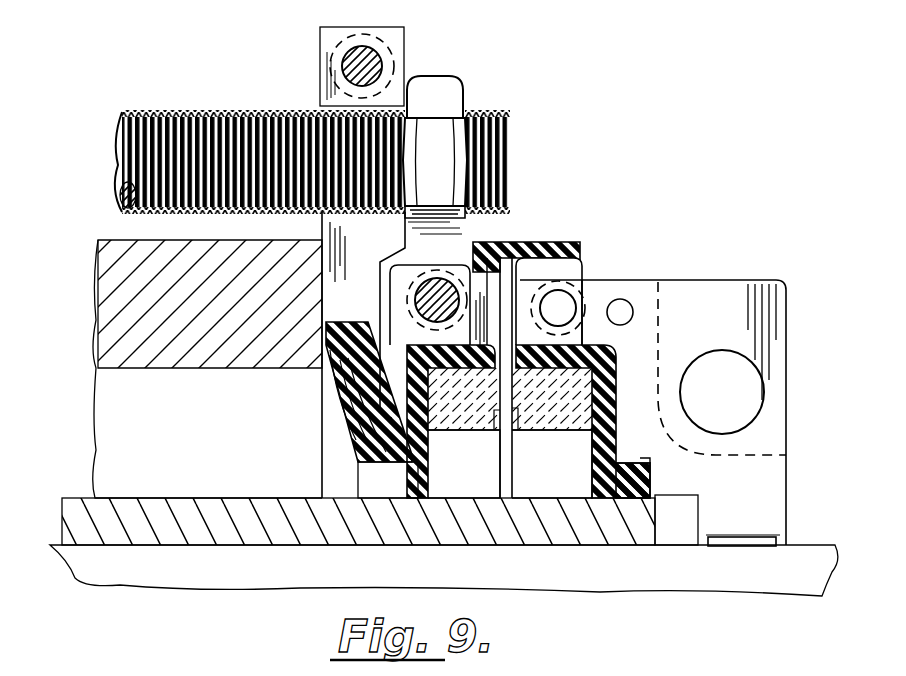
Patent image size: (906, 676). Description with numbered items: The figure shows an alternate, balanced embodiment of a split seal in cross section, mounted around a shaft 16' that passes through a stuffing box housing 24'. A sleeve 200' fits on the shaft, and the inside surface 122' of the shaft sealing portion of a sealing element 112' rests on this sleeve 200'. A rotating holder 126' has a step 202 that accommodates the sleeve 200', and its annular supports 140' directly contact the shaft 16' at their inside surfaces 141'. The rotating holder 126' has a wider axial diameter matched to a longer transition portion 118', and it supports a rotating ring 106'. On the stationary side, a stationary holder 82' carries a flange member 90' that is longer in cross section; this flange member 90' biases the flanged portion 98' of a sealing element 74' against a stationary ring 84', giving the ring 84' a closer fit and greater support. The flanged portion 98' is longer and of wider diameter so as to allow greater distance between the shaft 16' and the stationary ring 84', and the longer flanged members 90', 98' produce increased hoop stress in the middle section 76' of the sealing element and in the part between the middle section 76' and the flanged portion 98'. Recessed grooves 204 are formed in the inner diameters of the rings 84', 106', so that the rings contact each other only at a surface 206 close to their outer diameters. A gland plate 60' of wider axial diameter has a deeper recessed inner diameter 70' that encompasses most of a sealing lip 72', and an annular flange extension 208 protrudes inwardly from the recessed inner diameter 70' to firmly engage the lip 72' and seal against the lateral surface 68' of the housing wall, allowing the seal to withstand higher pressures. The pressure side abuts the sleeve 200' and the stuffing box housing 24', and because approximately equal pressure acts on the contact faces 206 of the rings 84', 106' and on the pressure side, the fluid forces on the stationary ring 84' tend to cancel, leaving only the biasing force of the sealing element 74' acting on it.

The shaft 16' is at (444, 585).
The sleeve 200' is at (328, 521).
The step 202 is at (697, 512).
The stuffing box housing 24' is at (177, 369).
The lateral surface of the housing wall 68' is at (312, 255).
The gland plate 60' is at (389, 58).
The sealing lip 72' is at (335, 355).
The recessed inner diameter 70' is at (338, 392).
The annular flange extension 208 is at (330, 428).
The sealing element 74' is at (318, 417).
The middle section 76' is at (328, 428).
The flange member 90' is at (388, 480).
The stationary ring 84' is at (437, 378).
The stationary holder 82' is at (517, 279).
The flanged portion 98' is at (510, 378).
The rotating ring 106' is at (550, 375).
The sealing element 112' is at (565, 412).
The transition portion 118' is at (663, 339).
The inside surface 122' is at (601, 526).
The recessed grooves 204 is at (442, 418).
The contact surface 206 is at (528, 418).
The rotating holder 126' is at (683, 412).
The inside surfaces 141' is at (741, 562).
The annular supports 140' is at (743, 515).